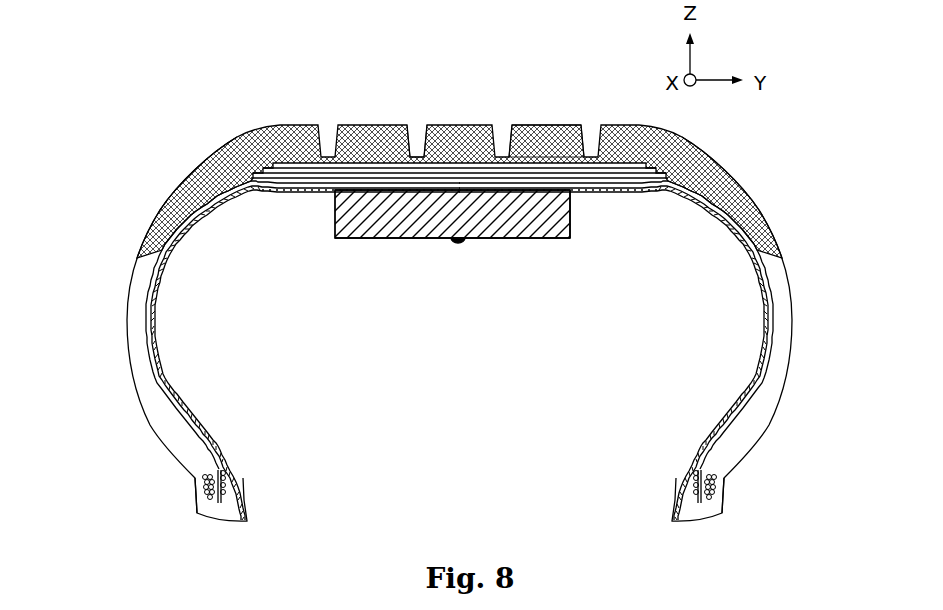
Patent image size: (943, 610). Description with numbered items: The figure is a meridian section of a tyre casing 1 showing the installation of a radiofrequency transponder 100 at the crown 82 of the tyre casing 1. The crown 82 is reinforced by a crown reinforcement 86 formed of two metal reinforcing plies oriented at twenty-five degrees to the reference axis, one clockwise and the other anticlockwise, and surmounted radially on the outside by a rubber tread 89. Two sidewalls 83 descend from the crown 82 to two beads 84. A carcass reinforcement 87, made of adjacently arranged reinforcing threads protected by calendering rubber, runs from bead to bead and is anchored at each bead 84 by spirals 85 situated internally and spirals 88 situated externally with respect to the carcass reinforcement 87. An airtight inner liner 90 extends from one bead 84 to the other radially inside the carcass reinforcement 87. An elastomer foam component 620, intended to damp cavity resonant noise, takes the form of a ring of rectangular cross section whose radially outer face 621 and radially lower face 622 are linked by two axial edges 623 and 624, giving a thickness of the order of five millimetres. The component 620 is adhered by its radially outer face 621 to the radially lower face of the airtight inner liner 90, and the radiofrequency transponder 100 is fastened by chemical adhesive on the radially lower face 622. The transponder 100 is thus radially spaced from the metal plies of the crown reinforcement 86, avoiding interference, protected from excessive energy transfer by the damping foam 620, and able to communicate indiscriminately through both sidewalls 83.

The tyre casing 1 is at (306, 84).
The crown 82 is at (518, 88).
The sidewalls 83 is at (810, 325).
The beads 84 is at (172, 484).
The spirals 85 is at (225, 469).
The crown reinforcement 86 is at (537, 125).
The carcass reinforcement 87 is at (180, 210).
The spirals 88 is at (207, 488).
The rubber tread 89 is at (447, 125).
The airtight inner liner 90 is at (158, 327).
The radiofrequency transponder 100 is at (457, 243).
The elastomer foam component 620 is at (407, 212).
The radially outer face 621 is at (390, 193).
The radially lower face 622 is at (497, 240).
The axial edge 623 is at (570, 217).
The axial edge 624 is at (335, 213).